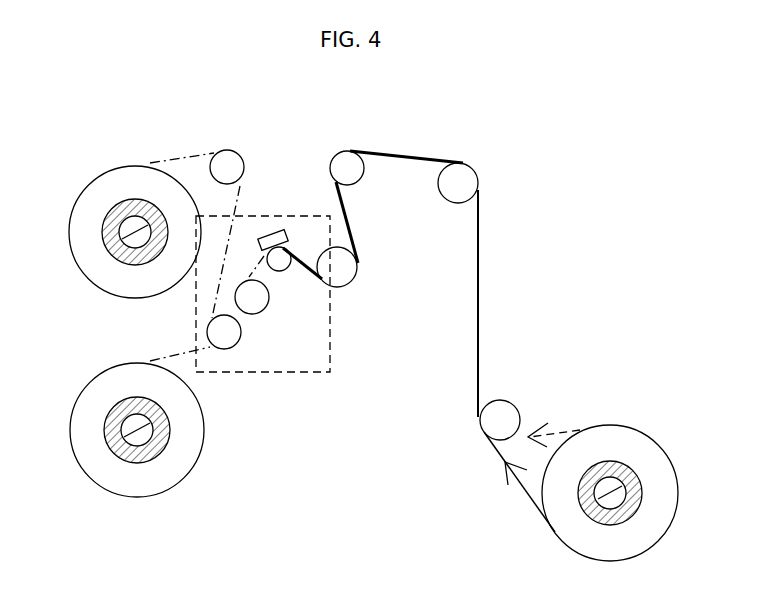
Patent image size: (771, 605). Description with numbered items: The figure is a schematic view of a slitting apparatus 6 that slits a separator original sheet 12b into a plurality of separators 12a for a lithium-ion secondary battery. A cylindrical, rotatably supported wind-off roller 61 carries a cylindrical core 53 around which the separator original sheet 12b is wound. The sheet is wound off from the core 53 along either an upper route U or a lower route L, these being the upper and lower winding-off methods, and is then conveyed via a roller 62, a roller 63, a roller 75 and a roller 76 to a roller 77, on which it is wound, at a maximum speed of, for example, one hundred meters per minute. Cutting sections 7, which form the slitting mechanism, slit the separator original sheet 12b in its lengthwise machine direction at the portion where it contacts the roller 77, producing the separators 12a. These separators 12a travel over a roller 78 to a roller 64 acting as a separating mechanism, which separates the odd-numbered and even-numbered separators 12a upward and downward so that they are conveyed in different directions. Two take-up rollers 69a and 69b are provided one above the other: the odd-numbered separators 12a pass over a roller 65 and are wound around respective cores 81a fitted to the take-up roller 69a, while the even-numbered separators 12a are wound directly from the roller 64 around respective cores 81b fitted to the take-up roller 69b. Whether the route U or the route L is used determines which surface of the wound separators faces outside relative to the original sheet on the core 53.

The slitting apparatus 6 is at (648, 140).
The cutting section 7 is at (275, 232).
The separator 12a is at (180, 155).
The separator original sheet 12b is at (480, 276).
The core 53 is at (637, 508).
The wind-off roller 61 is at (592, 502).
The roller 62 is at (497, 403).
The roller 63 is at (472, 170).
The roller 64 is at (228, 342).
The roller 65 is at (230, 162).
The take-up roller 69a is at (112, 250).
The take-up roller 69b is at (113, 443).
The roller 75 is at (345, 160).
The roller 76 is at (352, 272).
The roller 77 is at (285, 255).
The roller 78 is at (258, 303).
The core 81a is at (103, 228).
The core 81b is at (103, 423).
The route L is at (516, 490).
The route U is at (554, 428).